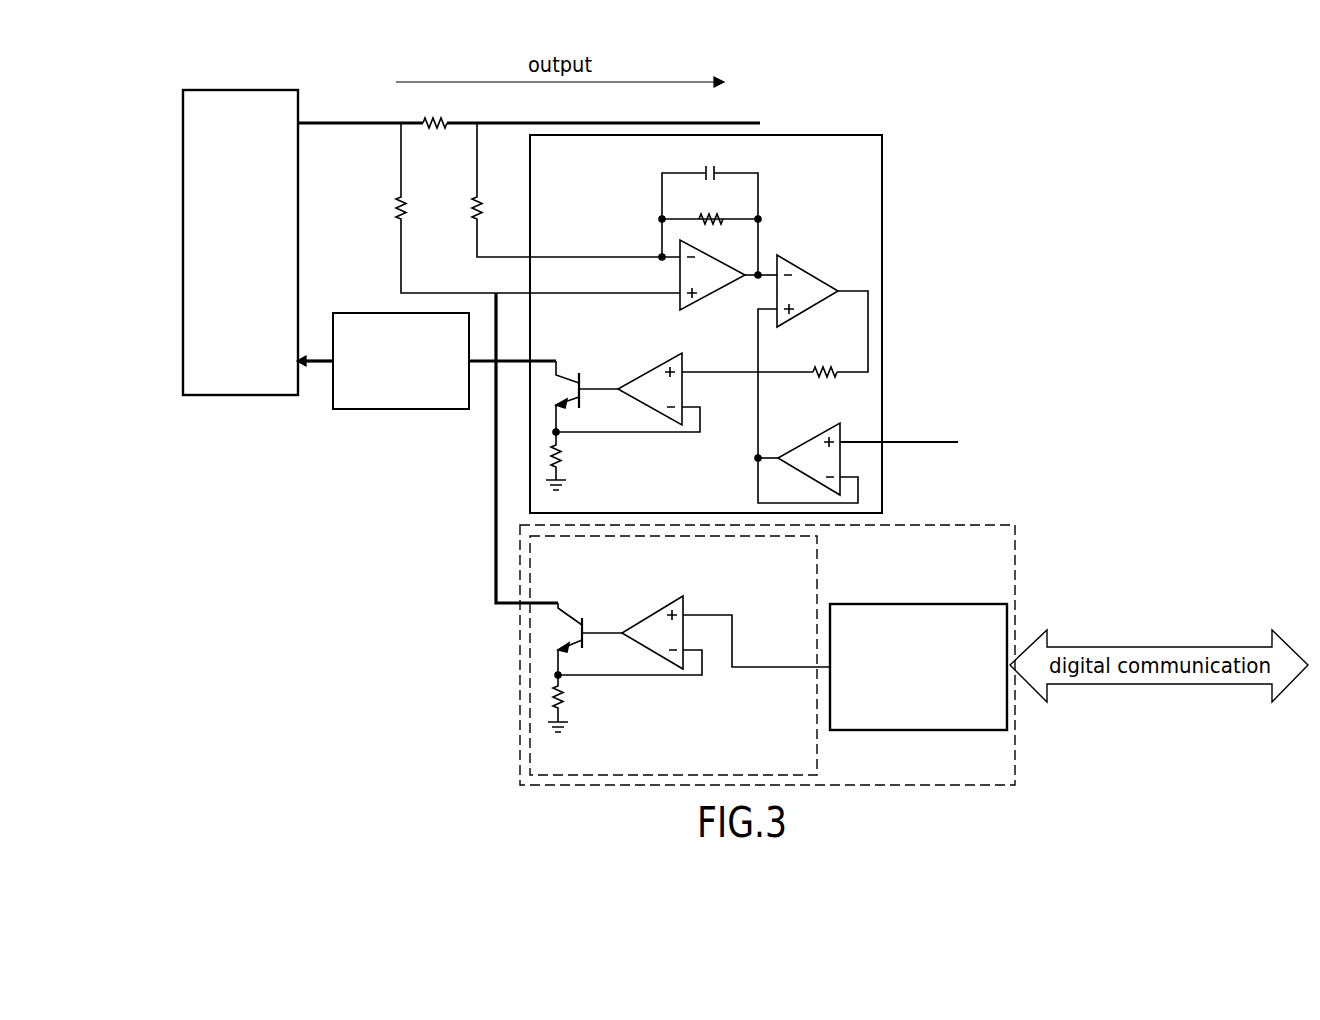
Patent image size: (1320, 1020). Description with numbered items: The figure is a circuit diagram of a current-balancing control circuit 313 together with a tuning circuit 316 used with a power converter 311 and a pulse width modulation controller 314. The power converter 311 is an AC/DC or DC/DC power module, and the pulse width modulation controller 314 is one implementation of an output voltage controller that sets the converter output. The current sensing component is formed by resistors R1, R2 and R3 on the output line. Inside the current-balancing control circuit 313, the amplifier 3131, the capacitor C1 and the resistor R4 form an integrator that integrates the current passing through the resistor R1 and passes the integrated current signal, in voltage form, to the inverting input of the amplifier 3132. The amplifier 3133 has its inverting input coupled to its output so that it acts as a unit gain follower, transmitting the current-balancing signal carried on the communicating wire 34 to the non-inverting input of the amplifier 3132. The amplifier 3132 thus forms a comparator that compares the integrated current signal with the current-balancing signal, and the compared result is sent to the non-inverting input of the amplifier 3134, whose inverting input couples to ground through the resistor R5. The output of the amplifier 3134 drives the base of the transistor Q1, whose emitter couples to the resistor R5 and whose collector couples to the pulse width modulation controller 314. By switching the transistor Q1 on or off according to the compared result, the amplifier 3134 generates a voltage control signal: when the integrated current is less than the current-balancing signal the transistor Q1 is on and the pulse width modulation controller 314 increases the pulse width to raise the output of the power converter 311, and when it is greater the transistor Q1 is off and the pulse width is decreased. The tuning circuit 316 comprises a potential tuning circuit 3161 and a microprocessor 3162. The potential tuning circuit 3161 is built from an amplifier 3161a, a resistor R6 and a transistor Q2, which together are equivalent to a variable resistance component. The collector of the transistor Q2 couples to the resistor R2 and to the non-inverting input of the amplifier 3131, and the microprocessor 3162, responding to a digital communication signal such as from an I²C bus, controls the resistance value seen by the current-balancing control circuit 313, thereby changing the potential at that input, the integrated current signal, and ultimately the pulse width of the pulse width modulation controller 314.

The power converter 311 is at (242, 396).
The current-balancing control circuit 313 is at (882, 194).
The pulse width modulation controller 314 is at (400, 410).
The tuning circuit 316 is at (1015, 555).
The communicating wire 34 is at (930, 440).
The amplifier 3131 is at (713, 293).
The amplifier 3132 is at (810, 272).
The amplifier 3133 is at (808, 440).
The amplifier 3134 is at (650, 368).
The potential tuning circuit 3161 is at (817, 760).
The amplifier 3161a is at (653, 613).
The microprocessor 3162 is at (905, 603).
The resistor R1 is at (432, 108).
The resistor R2 is at (538, 208).
The resistor R3 is at (576, 190).
The resistor R4 is at (709, 205).
The resistor R5 is at (570, 461).
The resistor R6 is at (573, 703).
The capacitor C1 is at (709, 161).
The transistor Q1 is at (573, 387).
The transistor Q2 is at (576, 633).